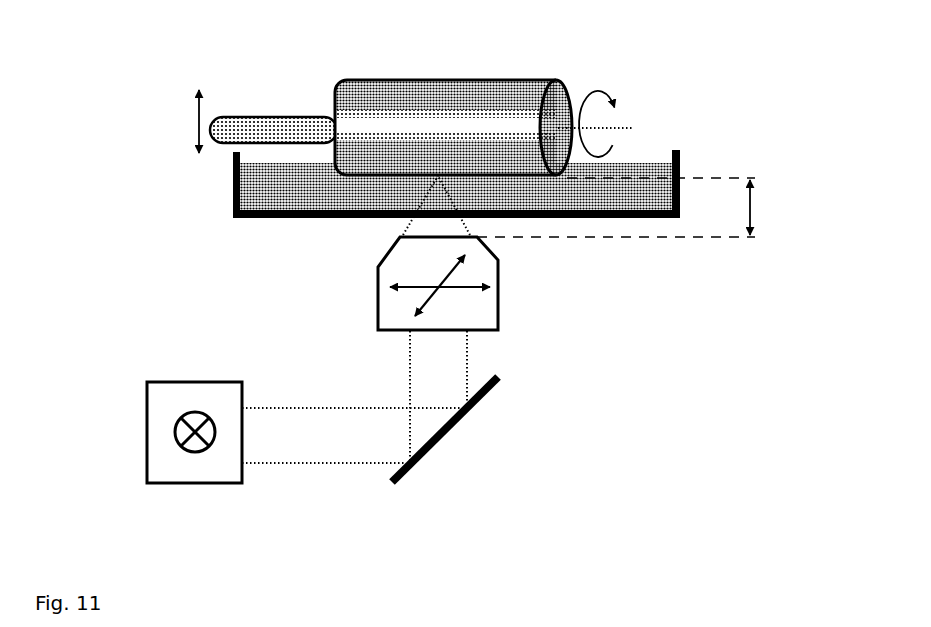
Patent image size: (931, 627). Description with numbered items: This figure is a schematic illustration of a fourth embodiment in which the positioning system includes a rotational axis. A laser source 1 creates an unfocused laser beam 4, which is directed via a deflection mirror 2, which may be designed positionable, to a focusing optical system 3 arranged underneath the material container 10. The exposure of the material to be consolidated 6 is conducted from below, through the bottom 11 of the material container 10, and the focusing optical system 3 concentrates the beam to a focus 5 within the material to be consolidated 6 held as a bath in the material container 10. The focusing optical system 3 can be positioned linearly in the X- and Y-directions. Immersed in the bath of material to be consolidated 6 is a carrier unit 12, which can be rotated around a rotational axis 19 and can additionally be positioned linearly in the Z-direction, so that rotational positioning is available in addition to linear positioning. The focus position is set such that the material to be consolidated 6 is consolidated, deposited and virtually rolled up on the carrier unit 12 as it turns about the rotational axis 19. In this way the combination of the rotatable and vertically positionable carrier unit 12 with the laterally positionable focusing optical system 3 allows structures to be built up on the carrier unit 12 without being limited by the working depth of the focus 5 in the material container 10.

The laser source 1 is at (157, 443).
The deflection mirror 2 is at (440, 442).
The focusing optical system 3 is at (488, 310).
The unfocused laser beam 4 is at (298, 442).
The focus 5 is at (438, 177).
The material to be consolidated 6 is at (610, 192).
The material container 10 is at (221, 192).
The bottom 11 is at (318, 218).
The carrier unit 12 is at (348, 108).
The rotational axis 19 is at (252, 125).